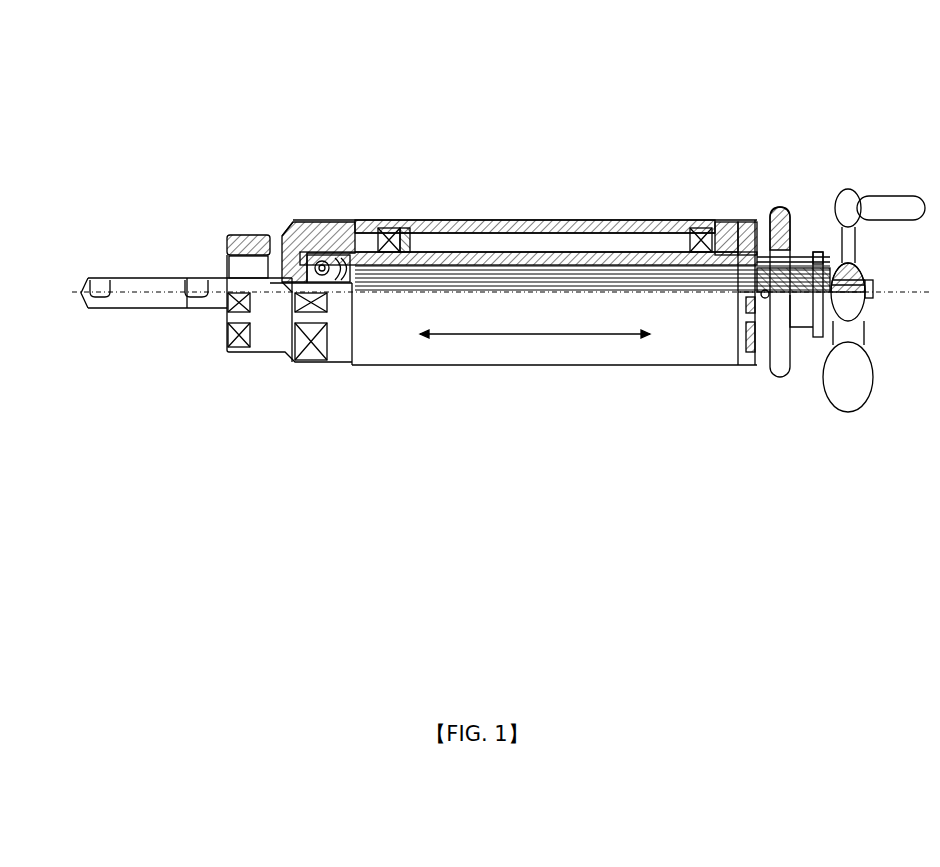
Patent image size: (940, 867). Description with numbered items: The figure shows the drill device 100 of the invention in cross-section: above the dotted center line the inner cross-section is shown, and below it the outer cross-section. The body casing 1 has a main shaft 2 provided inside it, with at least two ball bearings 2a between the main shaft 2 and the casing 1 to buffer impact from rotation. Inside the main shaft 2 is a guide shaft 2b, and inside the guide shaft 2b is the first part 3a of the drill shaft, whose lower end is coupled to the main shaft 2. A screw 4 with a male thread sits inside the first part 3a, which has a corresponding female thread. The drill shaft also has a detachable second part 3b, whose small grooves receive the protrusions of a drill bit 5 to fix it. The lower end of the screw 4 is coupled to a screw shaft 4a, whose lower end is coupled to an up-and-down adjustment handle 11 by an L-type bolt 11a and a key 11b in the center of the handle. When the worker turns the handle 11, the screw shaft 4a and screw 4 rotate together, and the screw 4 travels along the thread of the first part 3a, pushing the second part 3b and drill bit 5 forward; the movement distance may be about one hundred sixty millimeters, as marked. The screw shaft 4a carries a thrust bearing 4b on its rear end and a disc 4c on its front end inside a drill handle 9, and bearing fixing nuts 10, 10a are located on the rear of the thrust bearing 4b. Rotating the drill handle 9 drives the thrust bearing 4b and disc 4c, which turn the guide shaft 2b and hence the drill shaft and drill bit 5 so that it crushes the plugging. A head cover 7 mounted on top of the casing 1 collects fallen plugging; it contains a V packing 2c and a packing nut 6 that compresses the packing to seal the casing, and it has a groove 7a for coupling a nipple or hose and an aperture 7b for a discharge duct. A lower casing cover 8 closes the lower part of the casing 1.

The drill device 100 is at (162, 186).
The casing 1 is at (643, 223).
The main shaft 2 is at (506, 246).
The ball bearing 2a is at (393, 223).
The guide shaft 2b is at (438, 241).
The V packing 2c is at (313, 228).
The first part of the drill shaft 3a is at (355, 228).
The second part of the drill shaft 3b is at (325, 228).
The screw 4 is at (467, 249).
The screw shaft 4a is at (758, 221).
The thrust bearing 4b is at (791, 251).
The disc 4c is at (747, 227).
The drill bit 5 is at (220, 237).
The packing nut 6 is at (299, 235).
The head cover 7 is at (340, 224).
The groove 7a is at (236, 238).
The aperture 7b is at (272, 235).
The lower casing cover 8 is at (740, 223).
The drill handle 9 is at (780, 207).
The bearing fixing nut 10 is at (815, 253).
The bearing fixing nut 10a is at (822, 256).
The up-and-down adjustment handle 11 is at (852, 203).
The L-type bolt 11a is at (852, 293).
The key 11b is at (875, 282).